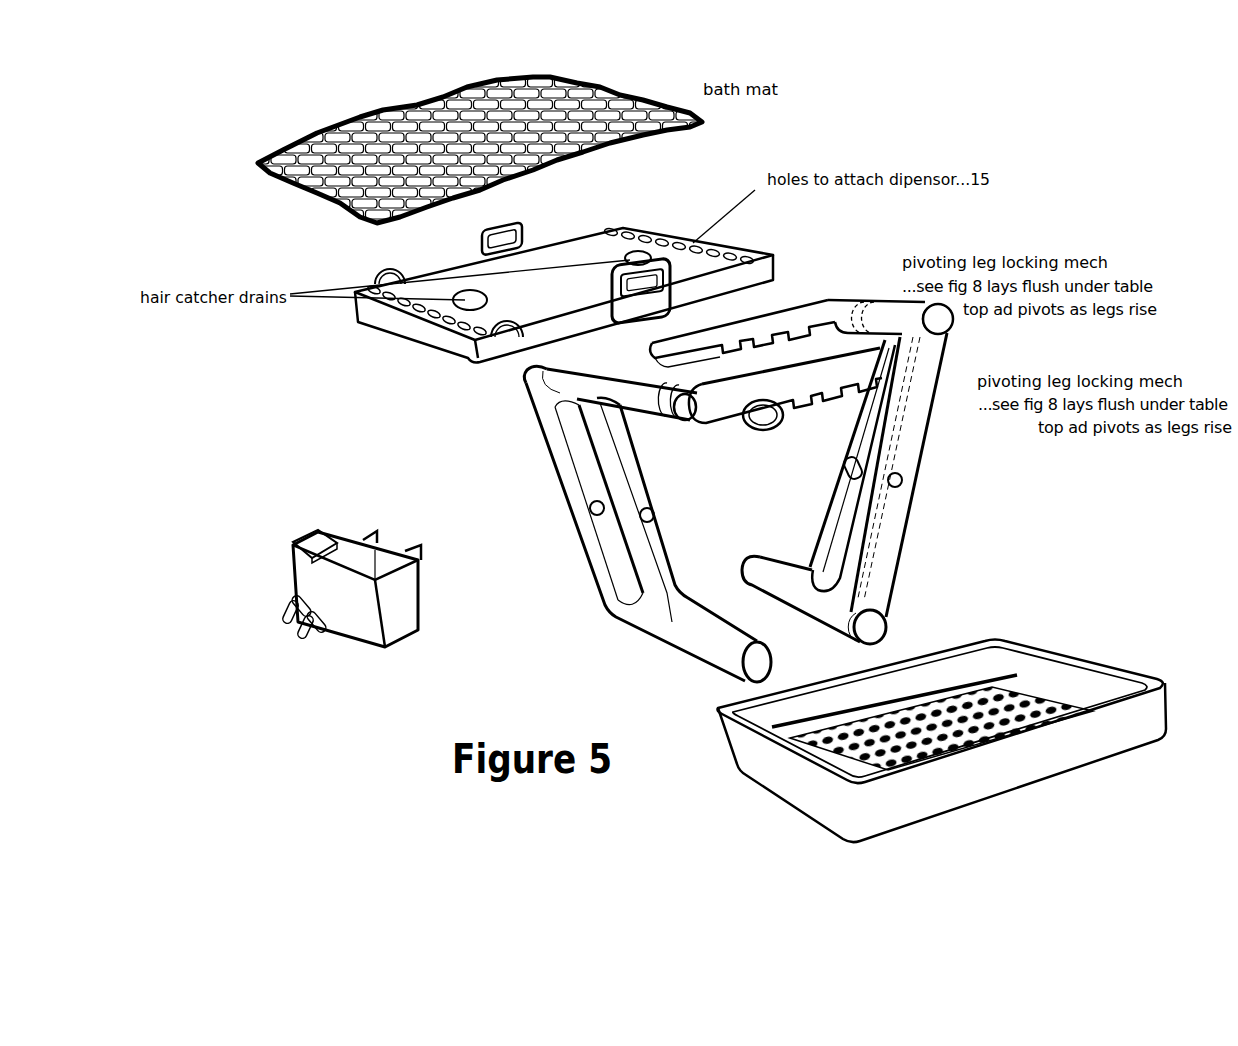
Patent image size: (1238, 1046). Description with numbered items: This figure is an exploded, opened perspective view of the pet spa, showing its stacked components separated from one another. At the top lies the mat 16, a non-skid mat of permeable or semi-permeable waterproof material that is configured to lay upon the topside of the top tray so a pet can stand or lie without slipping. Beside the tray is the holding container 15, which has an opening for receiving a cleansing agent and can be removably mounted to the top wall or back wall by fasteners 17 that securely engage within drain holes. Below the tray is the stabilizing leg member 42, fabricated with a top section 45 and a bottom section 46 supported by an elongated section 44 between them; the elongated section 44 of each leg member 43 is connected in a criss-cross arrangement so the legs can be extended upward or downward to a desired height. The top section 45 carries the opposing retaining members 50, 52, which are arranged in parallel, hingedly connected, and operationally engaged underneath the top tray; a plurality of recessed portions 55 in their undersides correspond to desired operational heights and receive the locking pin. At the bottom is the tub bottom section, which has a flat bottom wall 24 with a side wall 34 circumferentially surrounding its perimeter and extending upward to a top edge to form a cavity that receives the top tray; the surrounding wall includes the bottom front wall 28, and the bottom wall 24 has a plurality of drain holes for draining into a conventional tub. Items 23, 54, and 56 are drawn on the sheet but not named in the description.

The holding container 15 is at (363, 600).
The mat 16 is at (588, 112).
The fasteners 17 is at (397, 521).
The perforated drain plate 23 is at (1010, 690).
The flat bottom wall 24 is at (965, 713).
The bottom front wall 28 is at (805, 790).
The side wall 34 is at (1133, 671).
The stabilizing leg member 42 is at (553, 627).
The leg member 43 is at (563, 497).
The elongated section 44 is at (900, 461).
The top section 45 is at (940, 321).
The bottom section 46 is at (665, 625).
The retaining member 50 is at (775, 320).
The retaining member 52 is at (793, 375).
The table top with holes 54 is at (647, 240).
The recessed portions 55 is at (773, 335).
The pivot ring 56 is at (815, 395).